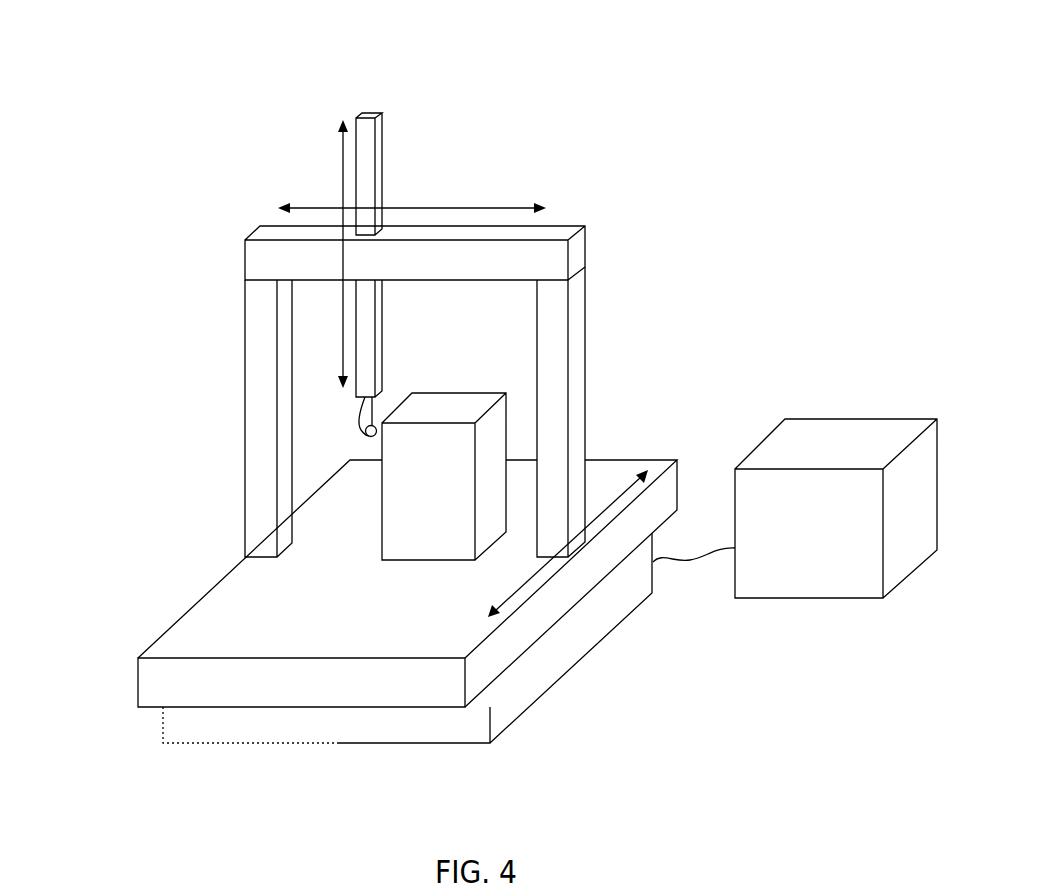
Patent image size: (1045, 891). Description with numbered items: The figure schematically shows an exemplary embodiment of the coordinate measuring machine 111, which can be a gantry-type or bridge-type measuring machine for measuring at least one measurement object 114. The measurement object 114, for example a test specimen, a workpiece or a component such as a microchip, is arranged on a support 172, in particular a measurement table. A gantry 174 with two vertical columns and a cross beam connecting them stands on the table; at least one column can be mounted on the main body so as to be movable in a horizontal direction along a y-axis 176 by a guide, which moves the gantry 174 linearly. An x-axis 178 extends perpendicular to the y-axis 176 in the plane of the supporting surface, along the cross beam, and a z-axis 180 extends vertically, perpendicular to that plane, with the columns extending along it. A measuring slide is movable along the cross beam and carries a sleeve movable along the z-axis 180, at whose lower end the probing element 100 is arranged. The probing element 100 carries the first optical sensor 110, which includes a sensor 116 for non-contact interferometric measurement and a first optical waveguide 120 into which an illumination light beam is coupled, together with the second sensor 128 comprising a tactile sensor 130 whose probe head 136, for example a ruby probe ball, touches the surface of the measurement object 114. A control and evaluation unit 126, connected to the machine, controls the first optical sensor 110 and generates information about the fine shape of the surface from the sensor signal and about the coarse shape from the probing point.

The coordinate measuring machine 111 is at (610, 174).
The gantry 174 is at (267, 258).
The support 172 is at (217, 607).
The y-axis 176 is at (613, 495).
The x-axis 178 is at (438, 208).
The z-axis 180 is at (340, 162).
The probing element 100 is at (383, 406).
The first optical sensor 110 is at (227, 410).
The sensor 116 is at (227, 410).
The first optical waveguide 120 is at (360, 424).
The second sensor 128 is at (205, 449).
The tactile sensor 130 is at (205, 449).
The probe head 136 is at (376, 434).
The measurement object 114 is at (450, 499).
The control and evaluation unit 126 is at (830, 538).